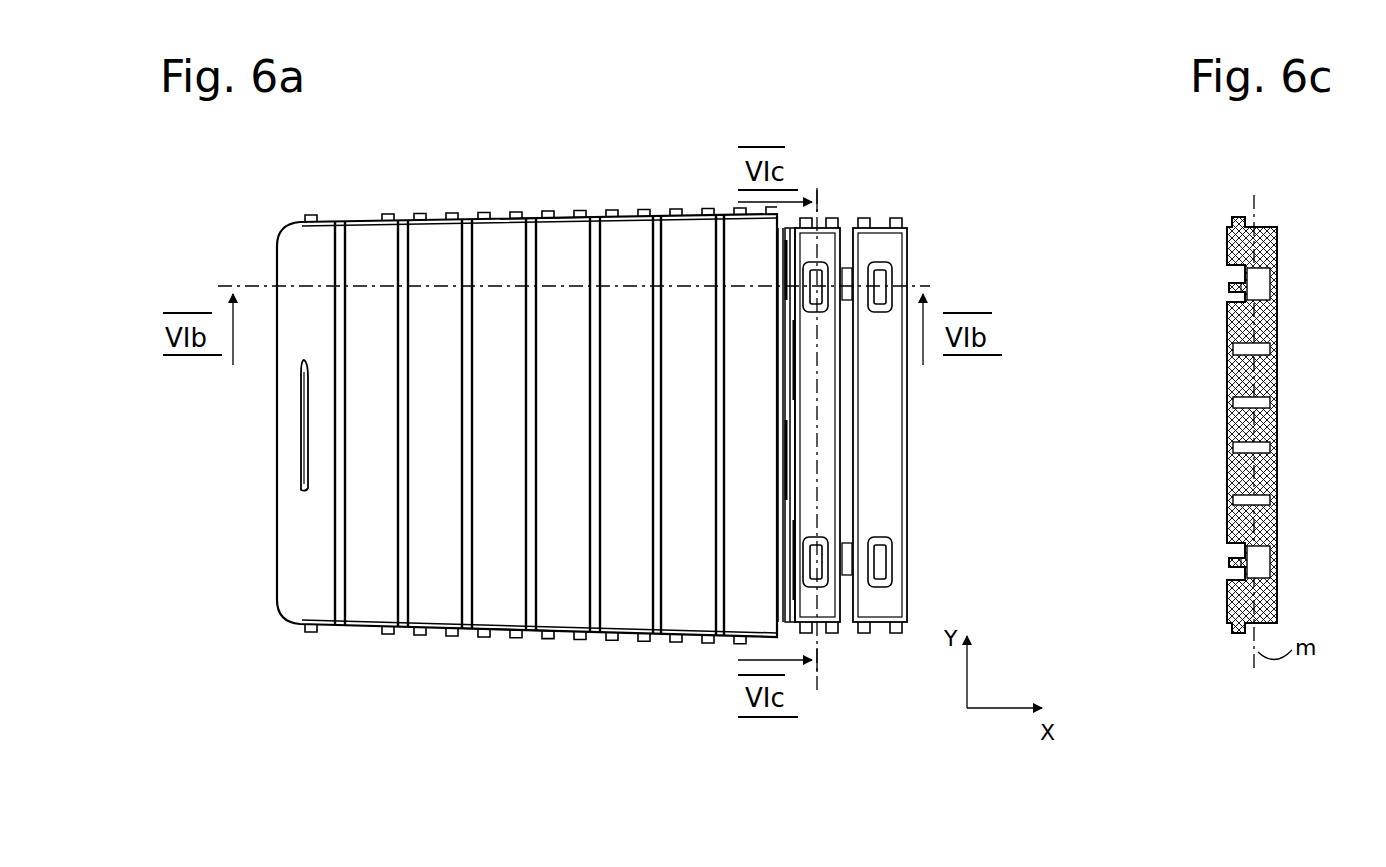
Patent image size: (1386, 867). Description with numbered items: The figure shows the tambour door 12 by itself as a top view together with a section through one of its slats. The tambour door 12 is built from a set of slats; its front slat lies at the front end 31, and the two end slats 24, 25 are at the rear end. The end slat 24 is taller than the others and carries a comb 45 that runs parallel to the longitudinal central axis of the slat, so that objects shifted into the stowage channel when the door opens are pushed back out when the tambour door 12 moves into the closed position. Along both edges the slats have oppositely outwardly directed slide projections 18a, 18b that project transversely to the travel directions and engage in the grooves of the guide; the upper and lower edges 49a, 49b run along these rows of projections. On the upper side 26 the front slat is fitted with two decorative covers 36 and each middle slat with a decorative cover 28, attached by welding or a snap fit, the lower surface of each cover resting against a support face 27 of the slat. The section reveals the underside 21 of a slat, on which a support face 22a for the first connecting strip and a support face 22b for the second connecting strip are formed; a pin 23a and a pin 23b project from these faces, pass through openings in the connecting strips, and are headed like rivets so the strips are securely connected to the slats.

In FIG. 6a, the tambour door 12 is at (950, 126).
In FIG. 6a, the slide projection 18a is at (484, 210).
In FIG. 6a, the slide projection 18b is at (453, 644).
In FIG. 6c, the underside 21 is at (1228, 386).
In FIG. 6c, the support face 22a is at (1228, 272).
In FIG. 6c, the support face 22b is at (1228, 550).
In FIG. 6c, the pin 23a is at (1226, 288).
In FIG. 6c, the pin 23b is at (1226, 567).
In FIG. 6a, the end slat 24 is at (844, 228).
In FIG. 6c, the end slat 24 is at (1283, 468).
In FIG. 6a, the end slat 25 is at (890, 248).
In FIG. 6c, the upper side 26 is at (1300, 350).
In FIG. 6c, the support face 27 is at (1282, 414).
In FIG. 6a, the decorative cover 28 is at (376, 632).
In FIG. 6a, the front end 31 is at (272, 489).
In FIG. 6a, the decorative cover 36 is at (295, 567).
In FIG. 6a, the comb 45 is at (780, 305).
In FIG. 6a, the upper edge 49a is at (546, 203).
In FIG. 6a, the lower edge 49b is at (500, 644).